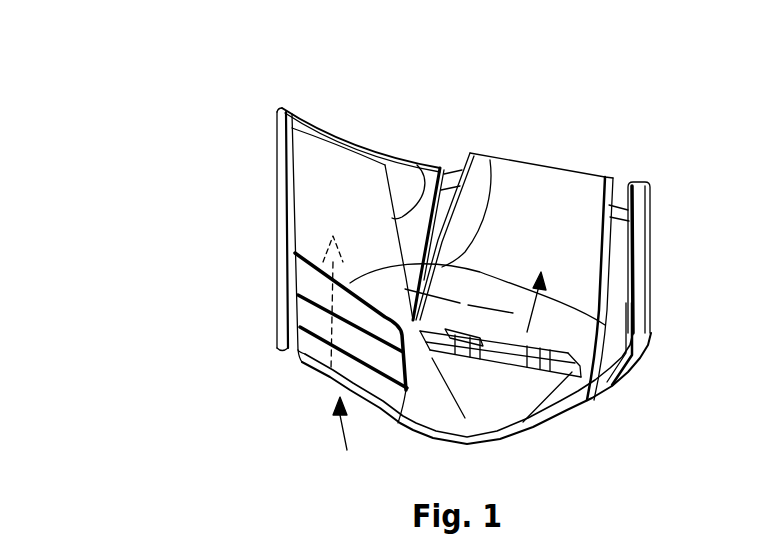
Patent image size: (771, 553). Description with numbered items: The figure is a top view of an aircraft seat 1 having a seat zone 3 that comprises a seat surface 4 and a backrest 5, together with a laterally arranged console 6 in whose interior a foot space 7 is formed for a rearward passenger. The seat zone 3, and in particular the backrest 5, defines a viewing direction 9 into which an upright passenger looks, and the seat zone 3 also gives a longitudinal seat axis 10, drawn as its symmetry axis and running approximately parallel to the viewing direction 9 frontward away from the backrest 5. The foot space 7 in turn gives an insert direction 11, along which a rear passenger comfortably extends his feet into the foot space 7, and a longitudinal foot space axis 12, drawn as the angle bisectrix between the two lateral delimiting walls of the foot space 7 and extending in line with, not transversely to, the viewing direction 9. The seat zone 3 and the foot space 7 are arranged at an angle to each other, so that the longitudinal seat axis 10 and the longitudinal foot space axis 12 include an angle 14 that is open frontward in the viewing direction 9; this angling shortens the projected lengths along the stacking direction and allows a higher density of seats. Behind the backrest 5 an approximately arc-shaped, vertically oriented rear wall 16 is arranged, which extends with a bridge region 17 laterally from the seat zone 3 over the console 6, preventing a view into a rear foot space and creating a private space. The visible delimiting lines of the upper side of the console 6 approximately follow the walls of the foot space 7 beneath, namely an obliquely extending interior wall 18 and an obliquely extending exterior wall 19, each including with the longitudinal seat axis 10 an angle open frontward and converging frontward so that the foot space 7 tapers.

The aircraft seat 1 is at (223, 303).
The seat zone 3 is at (580, 283).
The seat surface 4 is at (577, 193).
The backrest 5 is at (578, 347).
The console 6 is at (312, 163).
The foot space 7 is at (333, 377).
The viewing direction 9 is at (600, 347).
The longitudinal seat axis 10 is at (480, 475).
The insert direction 11 is at (340, 437).
The longitudinal foot space axis 12 is at (378, 475).
The angle 14 is at (490, 160).
The rear wall 16 is at (557, 420).
The bridge region 17 is at (388, 385).
The interior wall 18 is at (417, 165).
The exterior wall 19 is at (290, 215).